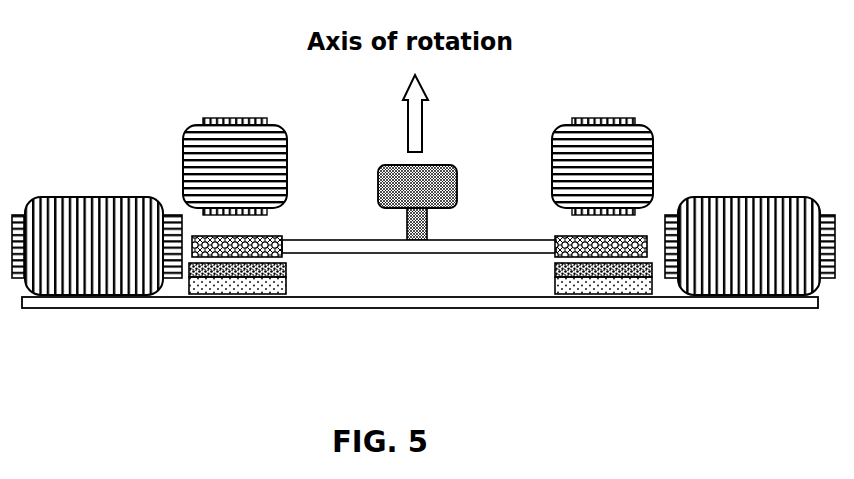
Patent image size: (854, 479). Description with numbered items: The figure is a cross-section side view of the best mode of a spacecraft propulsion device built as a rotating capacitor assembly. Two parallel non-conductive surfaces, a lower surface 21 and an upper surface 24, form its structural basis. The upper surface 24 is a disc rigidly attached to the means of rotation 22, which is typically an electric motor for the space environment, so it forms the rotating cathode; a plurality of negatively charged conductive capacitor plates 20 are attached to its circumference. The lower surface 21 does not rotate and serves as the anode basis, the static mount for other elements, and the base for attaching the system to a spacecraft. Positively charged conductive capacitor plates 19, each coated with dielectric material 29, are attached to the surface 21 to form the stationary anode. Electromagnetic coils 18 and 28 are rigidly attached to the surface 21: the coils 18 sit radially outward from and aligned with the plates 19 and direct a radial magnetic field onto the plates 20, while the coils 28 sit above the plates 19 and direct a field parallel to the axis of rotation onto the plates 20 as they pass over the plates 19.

The electromagnetic coils 18 is at (82, 197).
The positively charged conductive capacitor plates 19 is at (252, 295).
The negatively charged conductive capacitor plates 20 is at (282, 237).
The lower non-conductive surface 21 is at (650, 308).
The means of rotation 22 is at (378, 166).
The upper non-conductive surface 24 is at (408, 254).
The electromagnetic coils 28 is at (267, 118).
The dielectric material 29 is at (287, 265).